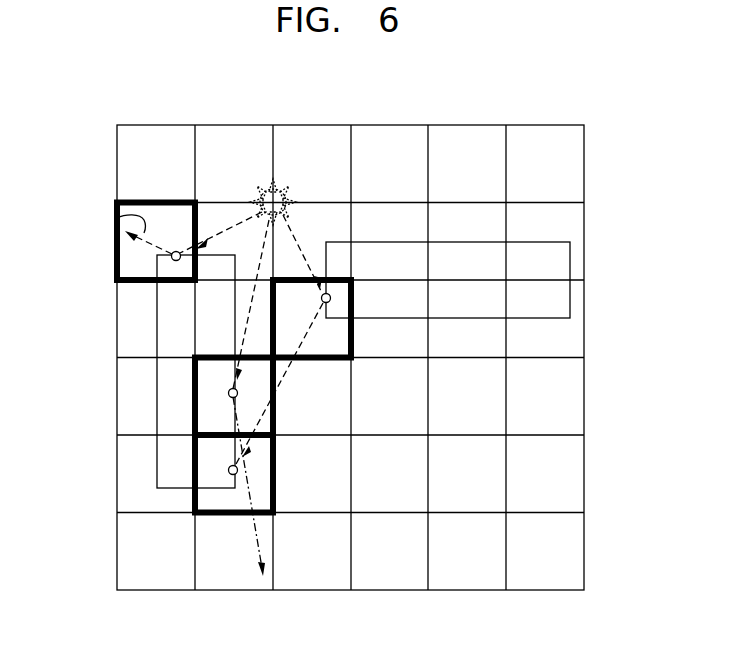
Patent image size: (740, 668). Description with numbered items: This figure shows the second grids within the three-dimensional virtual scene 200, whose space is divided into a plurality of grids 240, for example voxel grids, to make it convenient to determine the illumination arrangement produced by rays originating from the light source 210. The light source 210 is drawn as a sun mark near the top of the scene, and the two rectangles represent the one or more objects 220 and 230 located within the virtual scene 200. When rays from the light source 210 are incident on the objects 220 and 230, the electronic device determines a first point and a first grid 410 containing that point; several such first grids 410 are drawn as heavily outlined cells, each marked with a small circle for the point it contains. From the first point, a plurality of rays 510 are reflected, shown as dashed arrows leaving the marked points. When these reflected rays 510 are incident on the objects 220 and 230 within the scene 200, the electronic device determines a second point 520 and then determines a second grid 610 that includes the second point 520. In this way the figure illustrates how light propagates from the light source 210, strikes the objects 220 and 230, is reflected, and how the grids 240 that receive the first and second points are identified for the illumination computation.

The 3D virtual scene 200 is at (545, 125).
The light source 210 is at (273, 181).
The object 220 is at (157, 319).
The object 230 is at (570, 262).
The grid 240 is at (572, 474).
The first grid 410 is at (353, 298).
The reflected ray 510 is at (117, 218).
The second point 520 is at (249, 488).
The second grid 610 is at (195, 473).